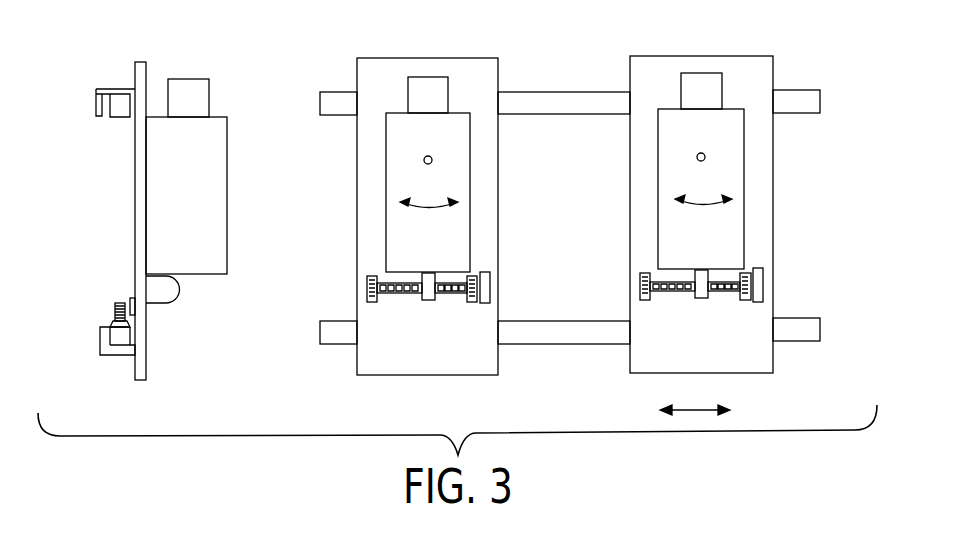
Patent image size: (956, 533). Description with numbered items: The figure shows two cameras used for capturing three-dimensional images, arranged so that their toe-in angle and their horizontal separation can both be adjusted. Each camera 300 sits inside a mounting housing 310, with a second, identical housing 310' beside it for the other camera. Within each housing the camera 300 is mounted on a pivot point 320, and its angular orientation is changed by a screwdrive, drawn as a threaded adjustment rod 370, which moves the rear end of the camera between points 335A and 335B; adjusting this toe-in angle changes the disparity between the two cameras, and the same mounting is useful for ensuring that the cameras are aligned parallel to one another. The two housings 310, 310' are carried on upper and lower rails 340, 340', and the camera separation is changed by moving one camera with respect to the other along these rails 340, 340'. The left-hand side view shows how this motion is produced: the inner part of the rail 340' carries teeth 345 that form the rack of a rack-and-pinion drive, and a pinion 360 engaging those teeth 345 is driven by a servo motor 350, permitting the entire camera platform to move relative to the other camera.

The camera 300 is at (470, 155).
The clamp housing 310 is at (427, 201).
The second clamp housing 310' is at (701, 199).
The pivot point 320 is at (423, 162).
The point 335A is at (371, 303).
The point 335B is at (472, 303).
The rail 340 is at (814, 121).
The rail 340' is at (816, 349).
The teeth 345 is at (110, 328).
The servo motor 350 is at (131, 299).
The pinion 360 is at (114, 306).
The threaded adjustment rod 370 is at (455, 281).